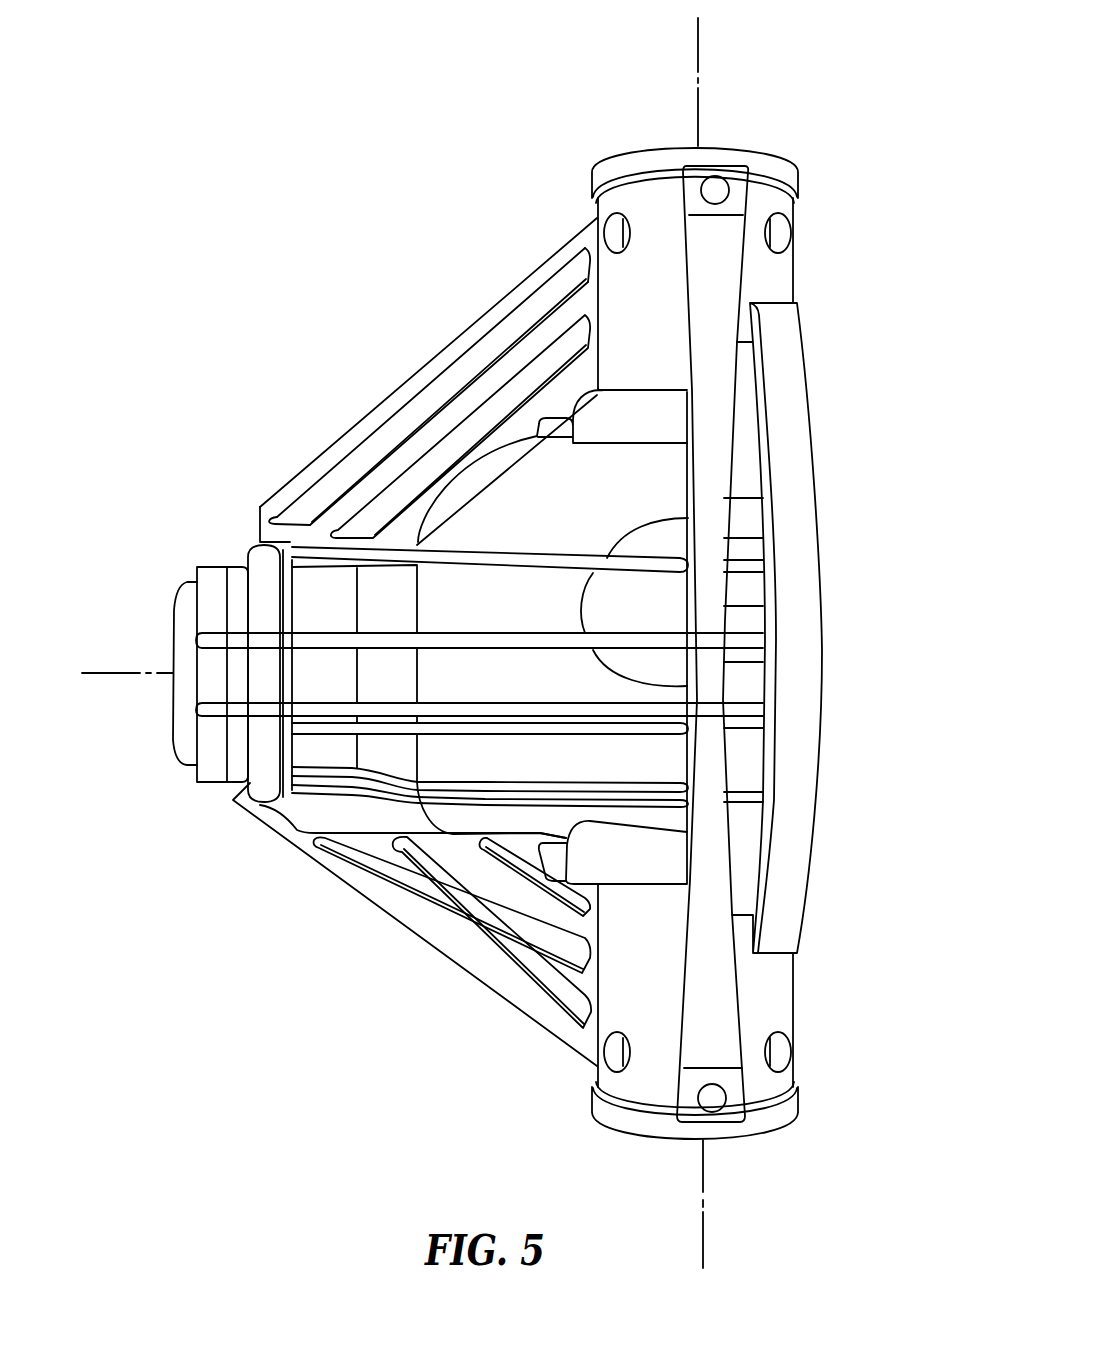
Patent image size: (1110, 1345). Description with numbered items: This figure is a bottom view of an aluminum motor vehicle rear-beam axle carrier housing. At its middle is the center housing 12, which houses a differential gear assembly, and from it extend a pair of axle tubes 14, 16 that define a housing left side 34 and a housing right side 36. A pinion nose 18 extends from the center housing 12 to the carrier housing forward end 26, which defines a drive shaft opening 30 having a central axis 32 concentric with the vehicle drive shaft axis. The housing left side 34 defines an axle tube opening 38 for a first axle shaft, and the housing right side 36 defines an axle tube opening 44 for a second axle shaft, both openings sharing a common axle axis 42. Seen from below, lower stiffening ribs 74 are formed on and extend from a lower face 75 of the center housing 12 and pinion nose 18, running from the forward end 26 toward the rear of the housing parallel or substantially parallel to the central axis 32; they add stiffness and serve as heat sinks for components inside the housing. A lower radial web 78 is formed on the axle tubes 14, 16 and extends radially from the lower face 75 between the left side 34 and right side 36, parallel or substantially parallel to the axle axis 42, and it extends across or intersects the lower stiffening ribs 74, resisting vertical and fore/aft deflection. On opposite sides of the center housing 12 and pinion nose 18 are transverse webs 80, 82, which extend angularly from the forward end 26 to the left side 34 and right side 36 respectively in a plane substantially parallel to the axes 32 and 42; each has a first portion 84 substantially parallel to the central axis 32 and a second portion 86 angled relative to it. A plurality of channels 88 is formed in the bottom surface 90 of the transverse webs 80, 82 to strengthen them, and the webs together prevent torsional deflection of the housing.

The center housing 12 is at (679, 763).
The axle tube 14 is at (606, 272).
The axle tube 16 is at (592, 1030).
The pinion nose 18 is at (264, 791).
The carrier housing forward end 26 is at (177, 566).
The drive shaft opening 30 is at (183, 694).
The central axis 32 is at (130, 672).
The housing left side 34 is at (817, 148).
The housing right side 36 is at (832, 1120).
The axle tube opening 38 is at (760, 130).
The axle axis 42 is at (699, 58).
The axle tube opening 44 is at (749, 1157).
The lower stiffening ribs 74 is at (738, 570).
The lower face 75 is at (675, 700).
The lower radial web 78 is at (715, 323).
The transverse web 80 is at (460, 932).
The transverse web 82 is at (393, 372).
The first portion 84 is at (333, 445).
The second portion 86 is at (441, 330).
The channels 88 is at (515, 332).
The bottom surface 90 is at (228, 521).